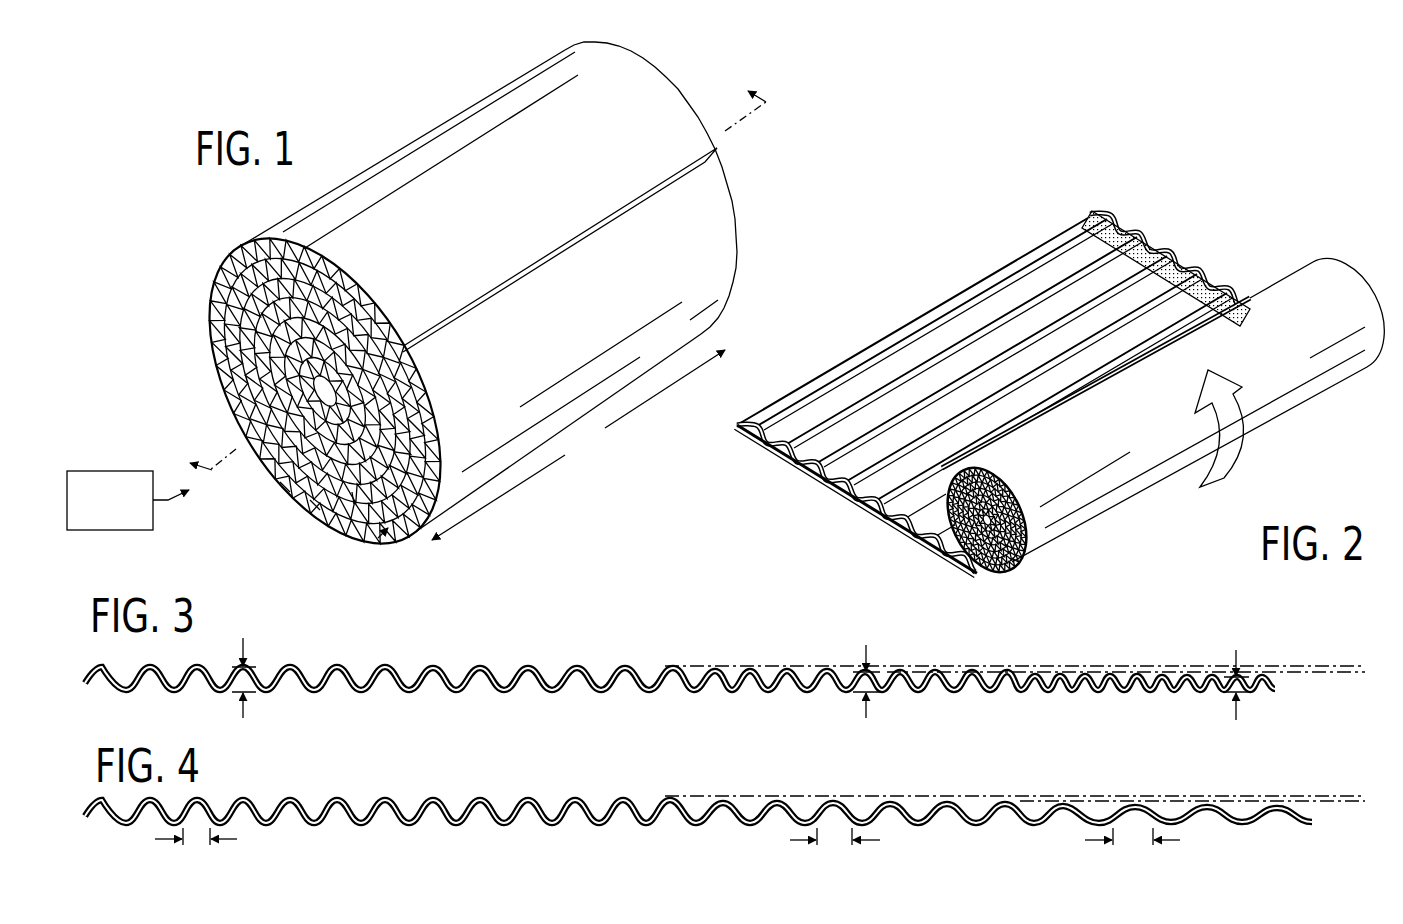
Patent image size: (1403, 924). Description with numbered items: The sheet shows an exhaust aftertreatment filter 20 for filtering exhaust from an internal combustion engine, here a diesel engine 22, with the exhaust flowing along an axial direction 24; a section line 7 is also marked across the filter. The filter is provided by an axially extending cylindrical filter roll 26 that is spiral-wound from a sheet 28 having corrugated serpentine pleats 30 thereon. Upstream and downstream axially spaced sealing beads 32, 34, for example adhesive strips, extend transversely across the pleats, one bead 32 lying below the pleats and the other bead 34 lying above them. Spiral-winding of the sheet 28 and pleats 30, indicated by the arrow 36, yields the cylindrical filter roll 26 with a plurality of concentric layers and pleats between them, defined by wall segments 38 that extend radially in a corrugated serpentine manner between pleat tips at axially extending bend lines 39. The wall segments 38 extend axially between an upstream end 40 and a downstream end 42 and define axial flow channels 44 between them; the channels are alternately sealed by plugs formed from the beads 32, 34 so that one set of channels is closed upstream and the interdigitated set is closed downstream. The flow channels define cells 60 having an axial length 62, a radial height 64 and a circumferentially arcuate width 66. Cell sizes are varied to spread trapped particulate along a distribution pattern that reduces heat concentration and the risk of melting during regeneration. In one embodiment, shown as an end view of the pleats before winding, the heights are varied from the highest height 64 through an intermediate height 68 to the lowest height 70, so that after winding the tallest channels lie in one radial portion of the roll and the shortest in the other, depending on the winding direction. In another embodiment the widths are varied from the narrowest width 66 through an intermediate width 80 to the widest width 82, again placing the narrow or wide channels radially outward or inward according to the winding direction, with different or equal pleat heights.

In FIG. 1, the section line 7- 7 is at (481, 296).
In FIG. 1, the exhaust aftertreatment filter 20 is at (361, 148).
In FIG. 1, the diesel engine 22 is at (117, 471).
In FIG. 1, the axial direction 24 is at (162, 500).
In FIG. 1, the cylindrical filter roll 26 is at (318, 232).
In FIG. 1, the sheet 28 is at (410, 344).
In FIG. 2, the sheet 28 is at (1010, 568).
In FIG. 1, the corrugated serpentine pleats 30 is at (417, 352).
In FIG. 2, the corrugated serpentine pleats 30 is at (860, 490).
In FIG. 3, the corrugated serpentine pleats 30 is at (305, 668).
In FIG. 4, the corrugated serpentine pleats 30 is at (298, 800).
In FIG. 2, the upstream sealing bead 32 is at (822, 468).
In FIG. 2, the downstream sealing bead 34 is at (1213, 258).
In FIG. 2, the spiral-winding arrow 36 is at (1240, 452).
In FIG. 1, the wall segments 38 is at (233, 270).
In FIG. 2, the axially extending bend lines 39 is at (889, 376).
In FIG. 1, the upstream end 40 is at (212, 358).
In FIG. 2, the upstream end 40 is at (772, 450).
In FIG. 1, the downstream end 42 is at (729, 232).
In FIG. 2, the downstream end 42 is at (1187, 237).
In FIG. 1, the axial flow channels 44 is at (390, 292).
In FIG. 1, the cells 60 is at (386, 538).
In FIG. 1, the axial length 62 is at (578, 445).
In FIG. 1, the radial height 64 is at (364, 547).
In FIG. 3, the radial height 64 is at (247, 715).
In FIG. 1, the circumferentially arcuate width 66 is at (332, 526).
In FIG. 4, the circumferentially arcuate width 66 is at (228, 842).
In FIG. 3, the intermediate height 68 is at (868, 716).
In FIG. 3, the lowest height 70 is at (1238, 718).
In FIG. 4, the intermediate width 80 is at (866, 842).
In FIG. 4, the widest width 82 is at (1163, 842).